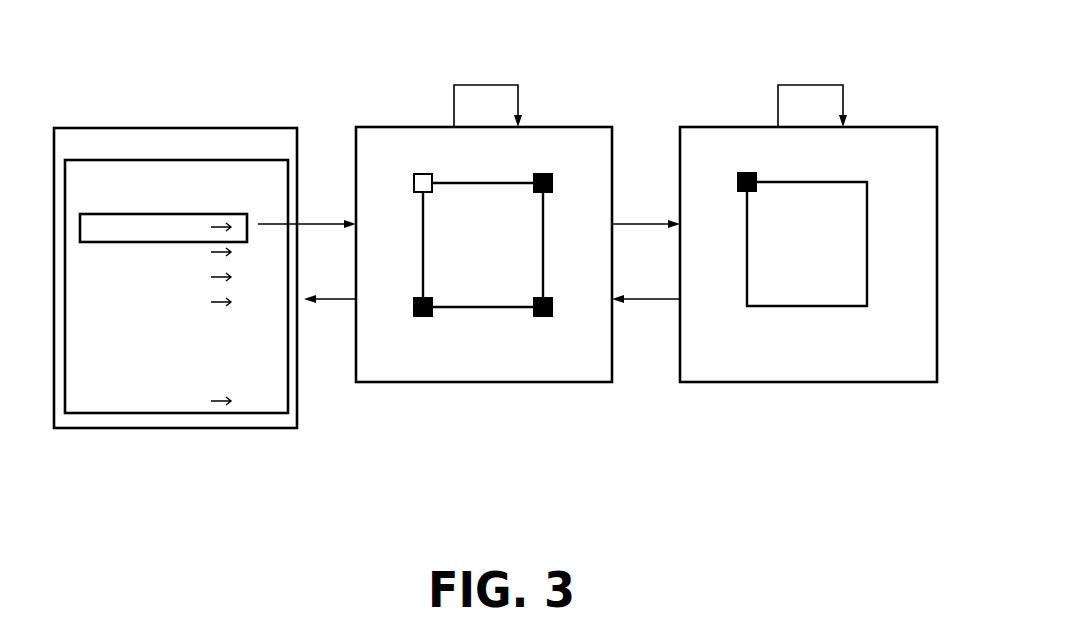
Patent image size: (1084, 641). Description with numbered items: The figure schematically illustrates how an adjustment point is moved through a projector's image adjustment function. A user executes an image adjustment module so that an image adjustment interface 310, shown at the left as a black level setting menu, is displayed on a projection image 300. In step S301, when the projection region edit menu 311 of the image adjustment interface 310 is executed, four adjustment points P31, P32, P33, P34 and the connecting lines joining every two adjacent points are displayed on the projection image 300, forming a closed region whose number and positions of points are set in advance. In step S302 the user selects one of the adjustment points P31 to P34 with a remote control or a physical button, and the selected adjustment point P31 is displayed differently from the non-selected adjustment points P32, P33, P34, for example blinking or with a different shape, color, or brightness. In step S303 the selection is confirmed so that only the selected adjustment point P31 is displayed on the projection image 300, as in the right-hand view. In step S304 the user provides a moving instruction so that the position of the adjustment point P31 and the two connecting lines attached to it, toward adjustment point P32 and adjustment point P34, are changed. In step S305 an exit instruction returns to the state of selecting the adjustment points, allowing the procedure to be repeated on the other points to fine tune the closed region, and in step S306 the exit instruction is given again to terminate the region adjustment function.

The projection image 300 is at (482, 382).
The image adjustment interface 310 is at (162, 119).
The projection region edit menu 311 is at (70, 225).
The adjustment point P31 is at (423, 174).
The adjustment point P32 is at (546, 174).
The adjustment point P33 is at (545, 316).
The adjustment point P34 is at (425, 316).
The step of displaying adjustment points S301 is at (320, 218).
The step of selecting an adjustment point S302 is at (497, 85).
The step of displaying only the selected adjustment point S303 is at (652, 222).
The step of moving the adjustment point S304 is at (822, 85).
The step of returning to point selection S305 is at (650, 301).
The step of terminating region adjustment S306 is at (338, 302).